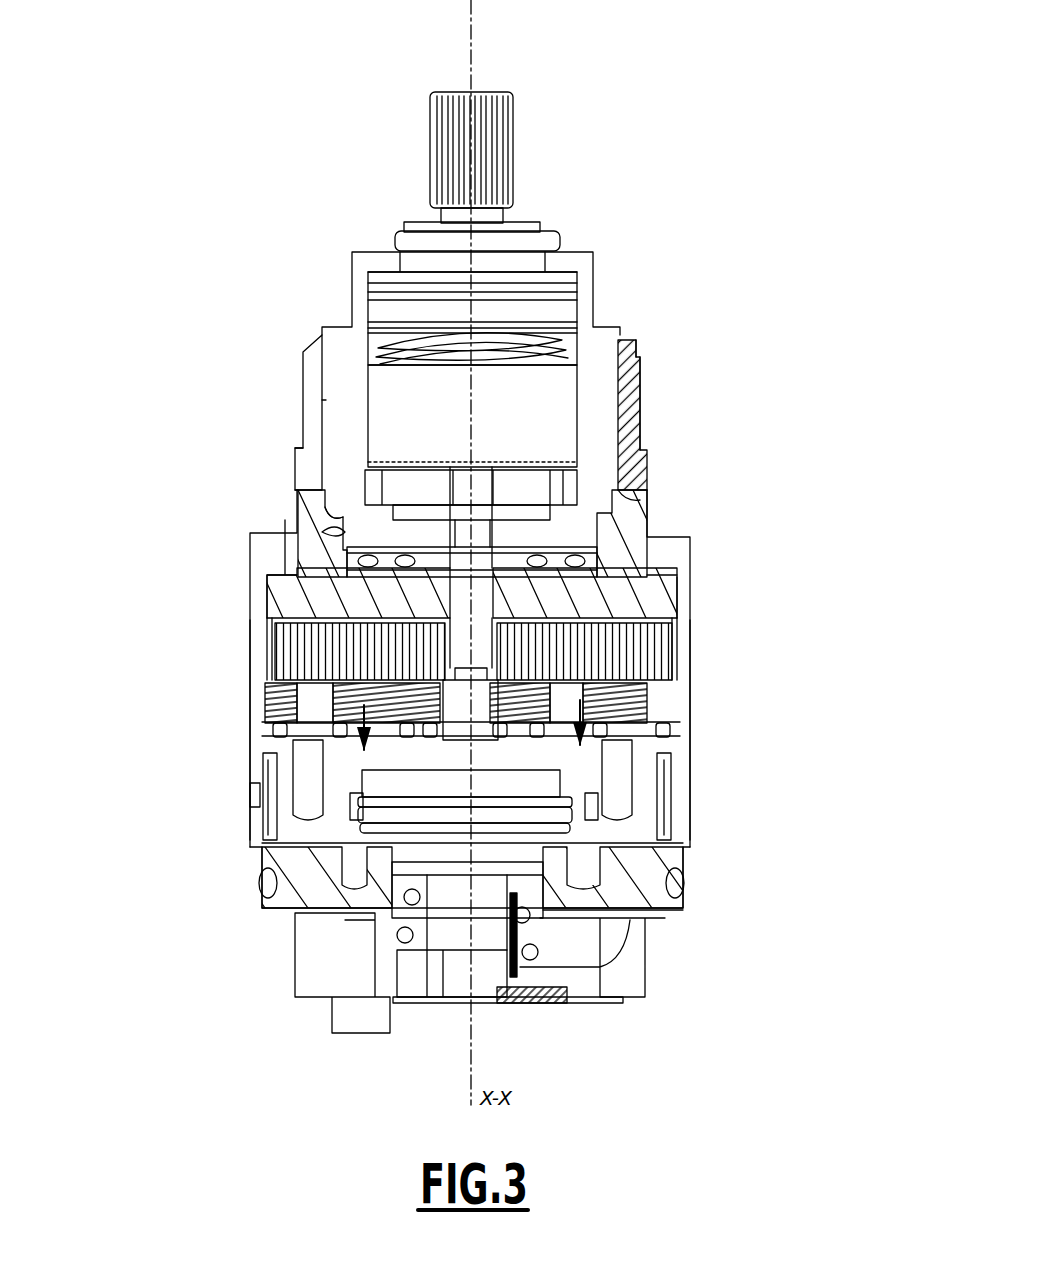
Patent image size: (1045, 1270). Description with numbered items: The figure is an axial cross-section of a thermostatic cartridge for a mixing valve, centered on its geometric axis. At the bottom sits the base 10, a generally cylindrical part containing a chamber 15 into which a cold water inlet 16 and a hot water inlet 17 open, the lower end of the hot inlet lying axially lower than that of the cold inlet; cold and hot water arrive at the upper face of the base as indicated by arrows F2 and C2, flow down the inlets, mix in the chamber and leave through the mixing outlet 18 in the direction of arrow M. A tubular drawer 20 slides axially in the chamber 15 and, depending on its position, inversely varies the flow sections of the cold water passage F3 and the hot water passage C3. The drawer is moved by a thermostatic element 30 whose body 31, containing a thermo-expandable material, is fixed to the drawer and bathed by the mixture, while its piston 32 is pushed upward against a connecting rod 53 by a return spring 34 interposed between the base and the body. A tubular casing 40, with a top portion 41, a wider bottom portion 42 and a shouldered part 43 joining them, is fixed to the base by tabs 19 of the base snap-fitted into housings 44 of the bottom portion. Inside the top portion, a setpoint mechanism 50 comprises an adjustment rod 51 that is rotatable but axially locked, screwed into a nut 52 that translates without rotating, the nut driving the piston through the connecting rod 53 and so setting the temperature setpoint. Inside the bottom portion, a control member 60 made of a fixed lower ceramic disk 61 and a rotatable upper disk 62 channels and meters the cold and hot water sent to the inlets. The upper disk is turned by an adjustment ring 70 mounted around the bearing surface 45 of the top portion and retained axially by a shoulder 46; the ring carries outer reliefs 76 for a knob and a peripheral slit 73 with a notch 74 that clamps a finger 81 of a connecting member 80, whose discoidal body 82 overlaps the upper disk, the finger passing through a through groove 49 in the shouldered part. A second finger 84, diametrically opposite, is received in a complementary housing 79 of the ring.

The base 10 is at (255, 905).
The chamber 15 is at (395, 865).
The cold water inlet 16 is at (340, 750).
The hot water inlet 17 is at (612, 785).
The mixing outlet 18 is at (520, 905).
The tabs 19 is at (262, 825).
The drawer 20 is at (370, 800).
The thermostatic element 30 is at (490, 985).
The body 31 is at (445, 945).
The piston 32 is at (450, 672).
The return spring 34 is at (403, 845).
The casing 40 is at (250, 612).
The top portion 41 is at (348, 410).
The bottom portion 42 is at (262, 680).
The shouldered part 43 is at (660, 560).
The housings 44 is at (693, 755).
The bearing surface 45 is at (318, 356).
The shoulder 46 is at (335, 331).
The through groove 49 is at (318, 530).
The setpoint mechanism 50 is at (580, 279).
The adjustment rod 51 is at (495, 215).
The nut 52 is at (577, 360).
The connecting rod 53 is at (530, 397).
The control member 60 is at (545, 666).
The lower disk 61 is at (650, 705).
The upper disk 62 is at (640, 660).
The adjustment ring 70 is at (654, 436).
The slit 73 is at (308, 437).
The notch 74 is at (310, 505).
The reliefs 76 is at (642, 400).
The housing 79 is at (647, 497).
The connecting member 80 is at (258, 568).
The finger 81 is at (300, 507).
The discoidal body 82 is at (282, 592).
The finger 84 is at (627, 525).
The cold water flow arrow F2 is at (364, 716).
The cold water passage F3 is at (258, 790).
The hot water flow arrow C2 is at (578, 711).
The hot water passage C3 is at (678, 884).
The mixture flow arrow M is at (494, 898).